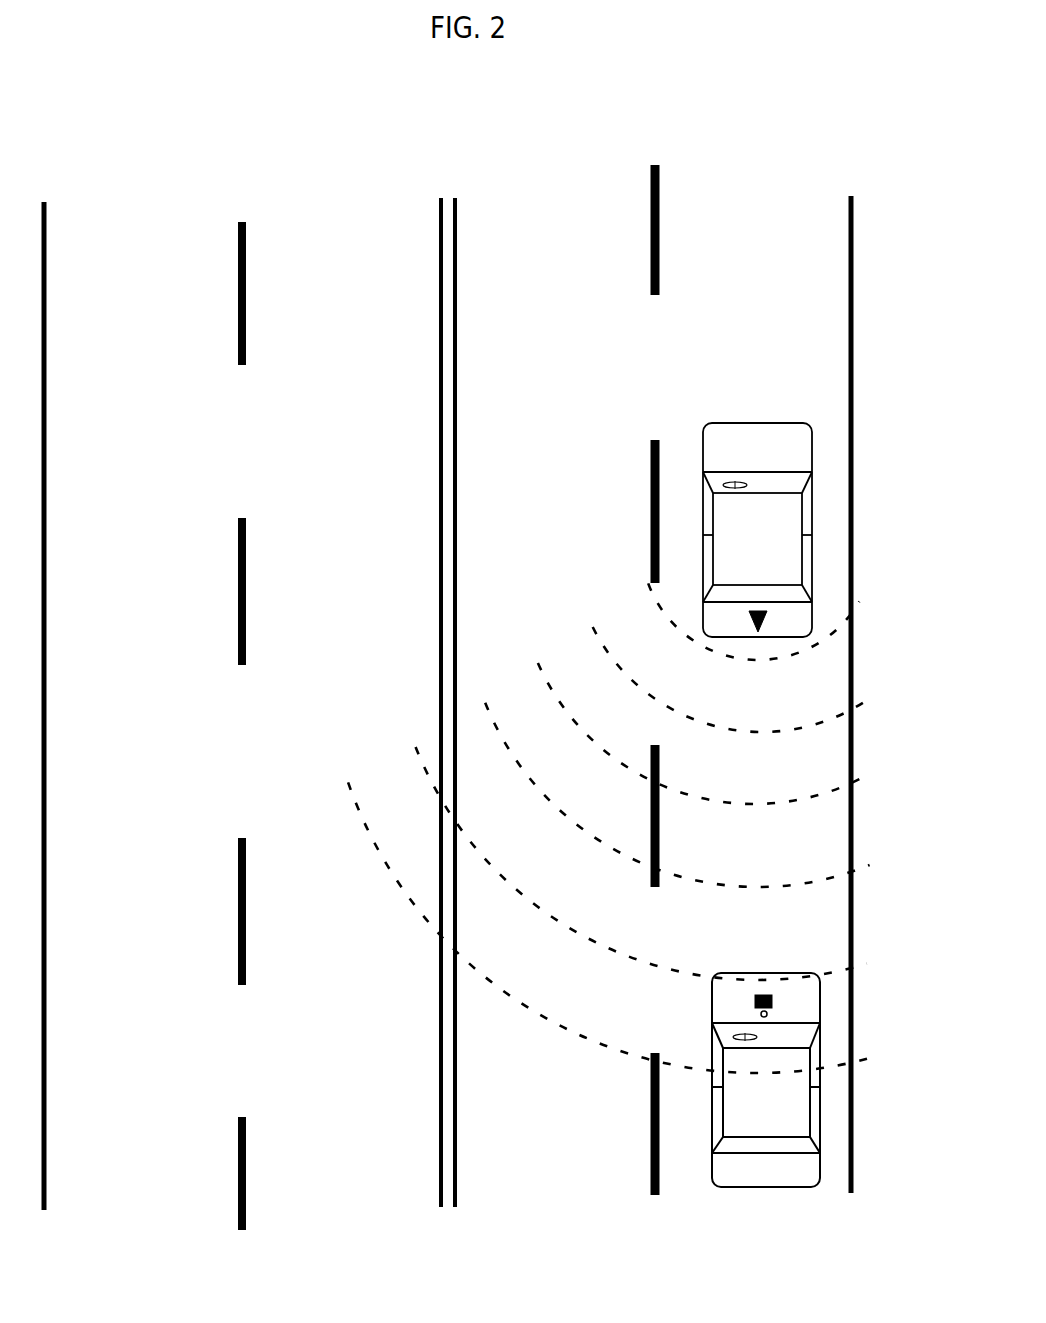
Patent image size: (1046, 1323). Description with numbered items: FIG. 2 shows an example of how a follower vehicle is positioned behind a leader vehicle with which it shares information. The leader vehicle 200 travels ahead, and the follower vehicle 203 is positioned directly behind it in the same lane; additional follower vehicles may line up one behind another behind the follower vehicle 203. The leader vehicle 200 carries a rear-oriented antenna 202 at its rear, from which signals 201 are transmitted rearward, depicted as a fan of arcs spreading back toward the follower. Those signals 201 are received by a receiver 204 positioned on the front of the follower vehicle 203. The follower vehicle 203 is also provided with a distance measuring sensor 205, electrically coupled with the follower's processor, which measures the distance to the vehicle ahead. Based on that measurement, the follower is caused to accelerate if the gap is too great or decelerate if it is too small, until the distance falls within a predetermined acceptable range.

The leader vehicle 200 is at (757, 530).
The signals 201 is at (634, 828).
The rear-oriented antenna 202 is at (762, 629).
The follower vehicle 203 is at (766, 1080).
The receiver 204 is at (767, 1015).
The distance measuring sensor 205 is at (772, 1001).